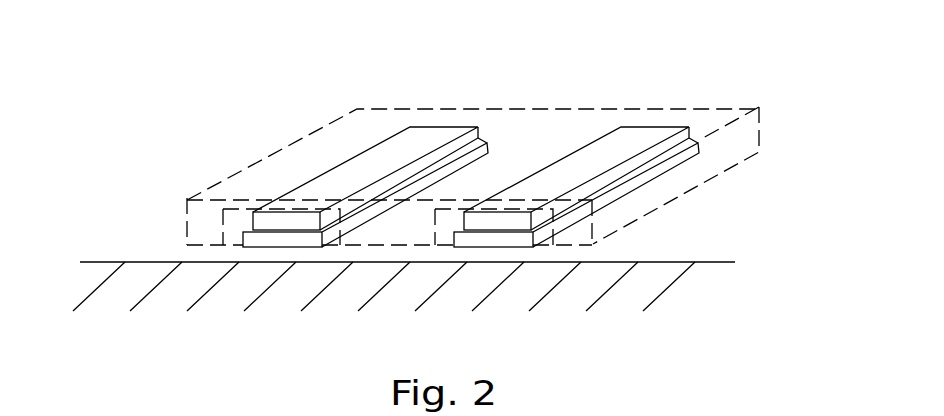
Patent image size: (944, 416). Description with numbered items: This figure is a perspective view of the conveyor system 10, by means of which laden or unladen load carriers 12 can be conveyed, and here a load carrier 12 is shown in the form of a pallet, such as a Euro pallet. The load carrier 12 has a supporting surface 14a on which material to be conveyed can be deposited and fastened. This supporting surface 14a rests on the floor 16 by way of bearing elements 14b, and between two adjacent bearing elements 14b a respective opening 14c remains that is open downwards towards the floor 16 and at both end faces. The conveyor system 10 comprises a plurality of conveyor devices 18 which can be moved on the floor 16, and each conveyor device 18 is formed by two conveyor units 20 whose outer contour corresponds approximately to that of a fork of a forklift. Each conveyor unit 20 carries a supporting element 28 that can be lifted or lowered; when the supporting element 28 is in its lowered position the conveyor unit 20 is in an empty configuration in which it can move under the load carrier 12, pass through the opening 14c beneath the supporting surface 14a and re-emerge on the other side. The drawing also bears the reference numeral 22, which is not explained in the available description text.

The sensor arrangement 10 is at (653, 65).
The carrier body 12 is at (734, 106).
The top surface of carrier body 14a is at (532, 133).
The recess 14b is at (202, 223).
The side wall of recess 14c is at (228, 223).
The base 16 is at (162, 196).
The sensor element 18 is at (688, 86).
The lower layer 20 is at (491, 139).
The upper layer 22 is at (413, 152).
The top surface of upper layer 28 is at (367, 167).